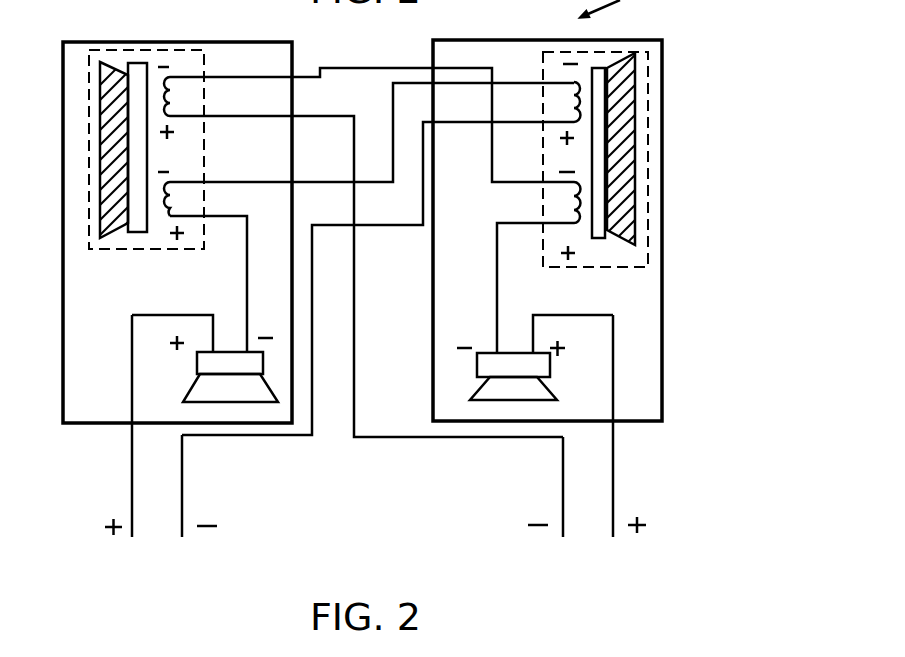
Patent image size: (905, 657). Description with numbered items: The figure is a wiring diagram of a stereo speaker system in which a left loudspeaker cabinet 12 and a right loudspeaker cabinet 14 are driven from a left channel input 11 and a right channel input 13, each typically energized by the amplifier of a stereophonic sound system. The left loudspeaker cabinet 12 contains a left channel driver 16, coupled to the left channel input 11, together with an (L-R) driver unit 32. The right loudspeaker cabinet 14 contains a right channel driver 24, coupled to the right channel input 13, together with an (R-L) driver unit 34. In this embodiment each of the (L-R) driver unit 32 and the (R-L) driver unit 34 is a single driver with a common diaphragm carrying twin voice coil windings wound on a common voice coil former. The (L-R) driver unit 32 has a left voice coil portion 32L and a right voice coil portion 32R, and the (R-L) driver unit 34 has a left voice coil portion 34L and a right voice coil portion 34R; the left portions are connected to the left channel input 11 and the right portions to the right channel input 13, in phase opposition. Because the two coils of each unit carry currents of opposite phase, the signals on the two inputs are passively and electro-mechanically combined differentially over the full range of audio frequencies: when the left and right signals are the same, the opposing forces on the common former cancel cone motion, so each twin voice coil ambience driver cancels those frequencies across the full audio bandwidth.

The left channel input 11 is at (165, 495).
The left loudspeaker cabinet 12 is at (218, 42).
The right channel input 13 is at (600, 461).
The right loudspeaker cabinet 14 is at (663, 40).
The left channel driver 16 is at (267, 386).
The right channel driver 24 is at (547, 389).
The (L-R) driver unit 32 is at (123, 50).
The right voice coil portion 32R is at (167, 79).
The left voice coil portion 32L is at (167, 183).
The (R-L) driver unit 34 is at (562, 53).
The left voice coil portion 34L is at (576, 82).
The right voice coil portion 34R is at (578, 182).